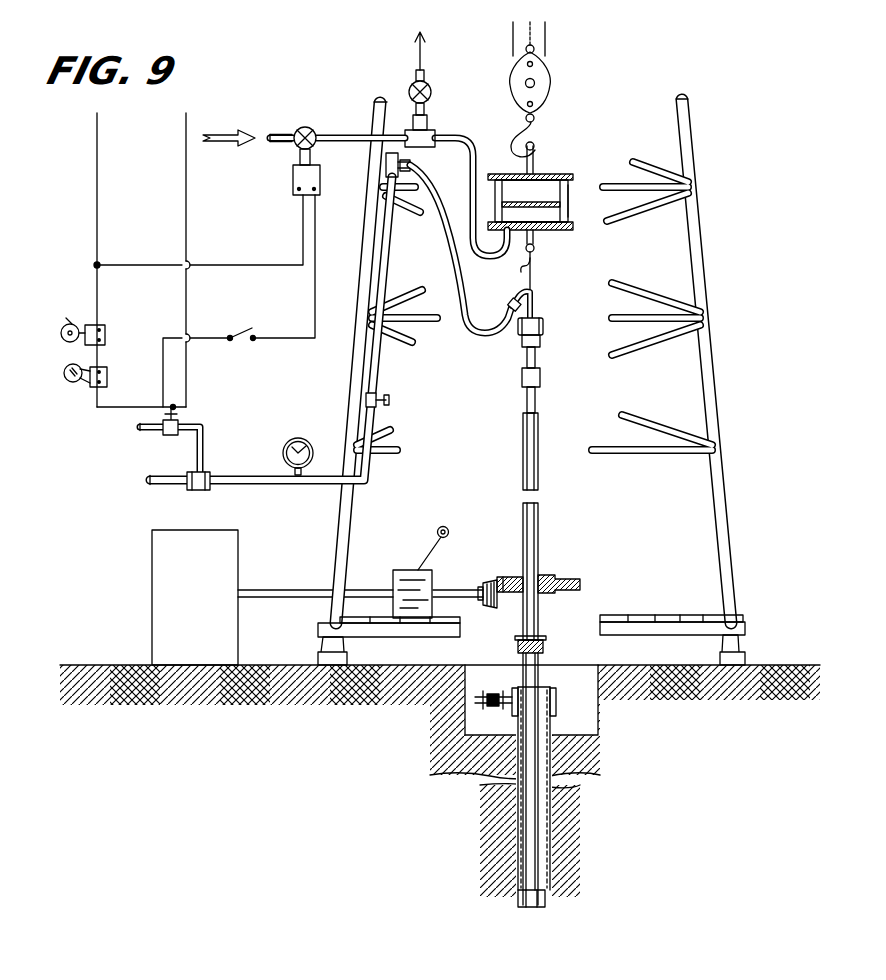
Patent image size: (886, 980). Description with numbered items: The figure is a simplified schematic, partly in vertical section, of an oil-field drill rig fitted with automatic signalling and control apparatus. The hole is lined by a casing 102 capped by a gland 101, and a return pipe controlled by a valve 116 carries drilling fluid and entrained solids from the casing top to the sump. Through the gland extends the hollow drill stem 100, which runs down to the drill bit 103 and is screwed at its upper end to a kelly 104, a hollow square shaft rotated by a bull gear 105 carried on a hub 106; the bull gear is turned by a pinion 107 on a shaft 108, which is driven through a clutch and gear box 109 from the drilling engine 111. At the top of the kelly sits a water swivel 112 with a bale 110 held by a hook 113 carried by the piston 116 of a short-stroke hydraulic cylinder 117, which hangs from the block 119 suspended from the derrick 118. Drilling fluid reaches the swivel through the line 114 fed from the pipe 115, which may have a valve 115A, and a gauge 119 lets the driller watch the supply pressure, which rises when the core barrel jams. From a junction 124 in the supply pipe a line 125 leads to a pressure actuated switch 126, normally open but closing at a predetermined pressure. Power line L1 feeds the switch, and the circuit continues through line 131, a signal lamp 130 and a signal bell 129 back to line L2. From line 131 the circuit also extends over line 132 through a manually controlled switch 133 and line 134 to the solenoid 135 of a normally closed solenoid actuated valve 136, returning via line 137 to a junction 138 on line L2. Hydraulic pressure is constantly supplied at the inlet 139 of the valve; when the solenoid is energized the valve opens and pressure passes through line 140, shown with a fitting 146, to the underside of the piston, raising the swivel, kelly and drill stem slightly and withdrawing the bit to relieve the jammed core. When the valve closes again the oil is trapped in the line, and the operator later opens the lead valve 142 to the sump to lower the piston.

The drill stem 100 is at (547, 686).
The cap (gland) 101 is at (552, 707).
The casing 102 is at (551, 729).
The drill bit 103 is at (546, 896).
The kelly 104 is at (540, 550).
The bull gear 105 is at (580, 584).
The rotary table hub 106 is at (545, 576).
The pinion 107 is at (491, 610).
The shaft 108 is at (455, 590).
The clutch and gear box 109 is at (393, 582).
The bale 110 is at (532, 295).
The drilling engine 111 is at (238, 572).
The water swivel 112 is at (545, 326).
The hook 113 is at (536, 258).
The line 114 is at (466, 305).
The pipe (supply line) 115 is at (383, 274).
The valve 115A is at (390, 397).
The valve / piston 116 is at (568, 192).
The hydraulic cylinder 117 is at (556, 174).
The derrick 118 is at (694, 240).
The block (tackle) / gauge 119 is at (542, 85).
The junction 124 is at (198, 490).
The line 125 is at (202, 438).
The pressure actuated switch 126 is at (176, 408).
The signal bell 129 is at (88, 325).
The signal lamp 130 is at (73, 382).
The line 131 is at (118, 407).
The line 132 is at (203, 338).
The manually controlled switch 133 is at (246, 343).
The line 134 is at (272, 340).
The solenoid 135 is at (293, 178).
The solenoid actuated valve 136 is at (312, 128).
The line 137 is at (207, 265).
The junction 138 is at (100, 264).
The inlet 139 is at (275, 134).
The line 140 is at (470, 150).
The lead valve 142 is at (430, 84).
The fitting 146 is at (437, 130).
The line L1 is at (186, 121).
The line L2 is at (97, 150).